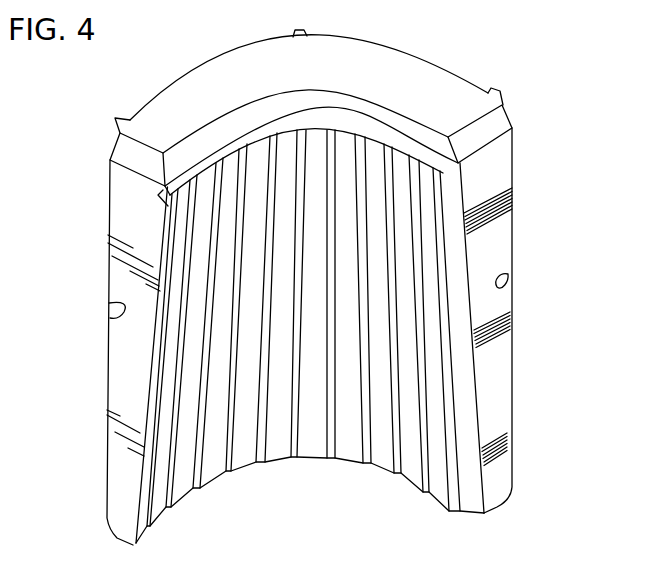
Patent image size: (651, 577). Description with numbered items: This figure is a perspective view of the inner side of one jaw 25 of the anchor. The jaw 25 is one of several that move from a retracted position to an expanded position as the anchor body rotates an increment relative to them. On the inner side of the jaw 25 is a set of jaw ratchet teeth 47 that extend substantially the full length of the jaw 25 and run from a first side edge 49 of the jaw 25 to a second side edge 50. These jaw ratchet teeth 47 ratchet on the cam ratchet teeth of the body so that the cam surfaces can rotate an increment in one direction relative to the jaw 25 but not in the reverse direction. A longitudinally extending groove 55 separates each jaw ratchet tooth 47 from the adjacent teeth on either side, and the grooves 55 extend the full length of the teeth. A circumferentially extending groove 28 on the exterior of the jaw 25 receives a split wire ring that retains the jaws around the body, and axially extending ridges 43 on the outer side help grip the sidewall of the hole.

The jaw 25 is at (497, 122).
The axially extending ridge 43 is at (498, 95).
The second side edge 50 is at (118, 362).
The first side edge 49 is at (498, 383).
The circumferentially extending groove 28 is at (510, 276).
The longitudinally extending groove 55 is at (228, 473).
The jaw ratchet tooth 47 is at (417, 478).